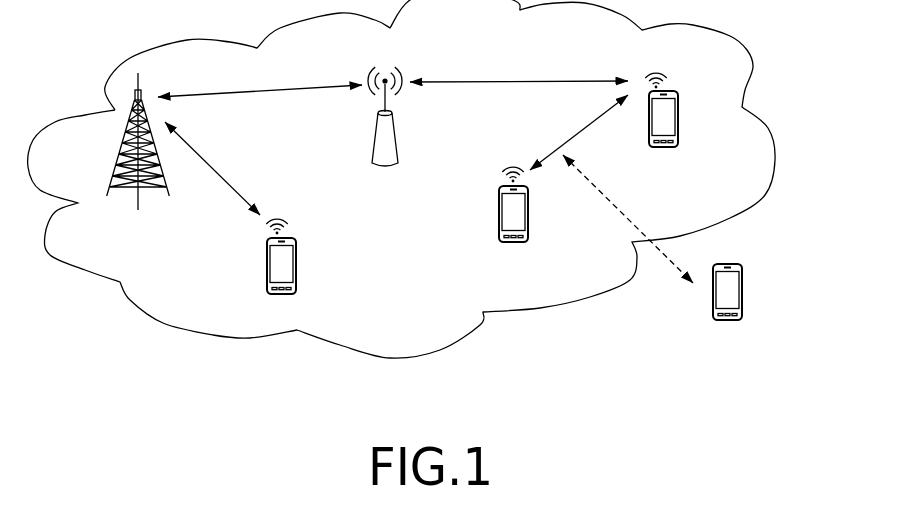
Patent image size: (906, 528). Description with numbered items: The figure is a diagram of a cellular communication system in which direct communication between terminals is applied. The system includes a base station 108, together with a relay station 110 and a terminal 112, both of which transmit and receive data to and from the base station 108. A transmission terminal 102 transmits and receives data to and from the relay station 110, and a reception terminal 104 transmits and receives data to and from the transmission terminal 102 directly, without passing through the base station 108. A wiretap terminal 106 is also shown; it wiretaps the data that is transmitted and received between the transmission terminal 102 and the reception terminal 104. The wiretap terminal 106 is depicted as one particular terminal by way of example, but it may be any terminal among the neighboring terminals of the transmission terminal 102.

The transmission terminal 102 is at (680, 128).
The reception terminal 104 is at (497, 212).
The wiretap terminal 106 is at (744, 290).
The base station 108 is at (121, 153).
The relay station 110 is at (372, 143).
The terminal 112 is at (300, 265).